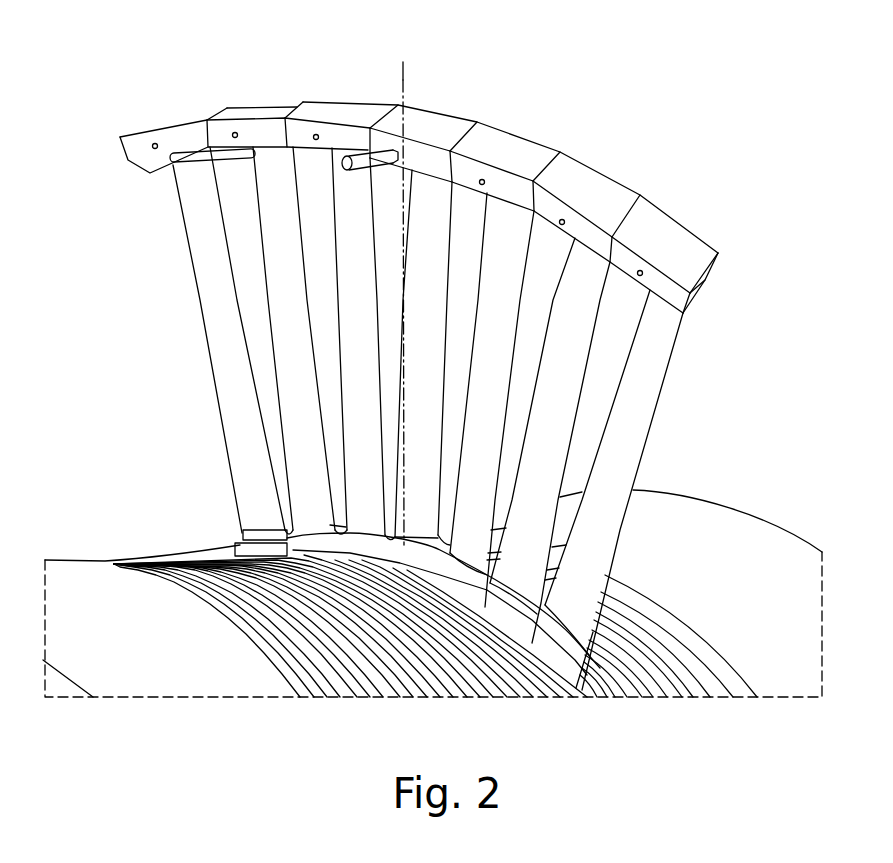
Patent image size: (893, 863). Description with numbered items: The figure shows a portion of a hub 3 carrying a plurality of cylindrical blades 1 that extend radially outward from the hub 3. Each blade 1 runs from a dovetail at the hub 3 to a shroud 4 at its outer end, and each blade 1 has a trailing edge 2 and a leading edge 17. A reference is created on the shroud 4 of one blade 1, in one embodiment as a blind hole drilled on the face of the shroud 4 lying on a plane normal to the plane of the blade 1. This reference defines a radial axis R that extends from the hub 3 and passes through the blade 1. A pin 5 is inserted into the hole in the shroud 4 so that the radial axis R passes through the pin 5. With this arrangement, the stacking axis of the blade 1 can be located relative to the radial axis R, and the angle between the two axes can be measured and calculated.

The cylindrical blade 1 is at (549, 20).
The trailing edge 2 is at (457, 218).
The hub 3 is at (198, 545).
The shroud 4 is at (460, 120).
The pin 5 is at (372, 127).
The leading edge 17 is at (178, 262).
The radial axis R is at (403, 80).